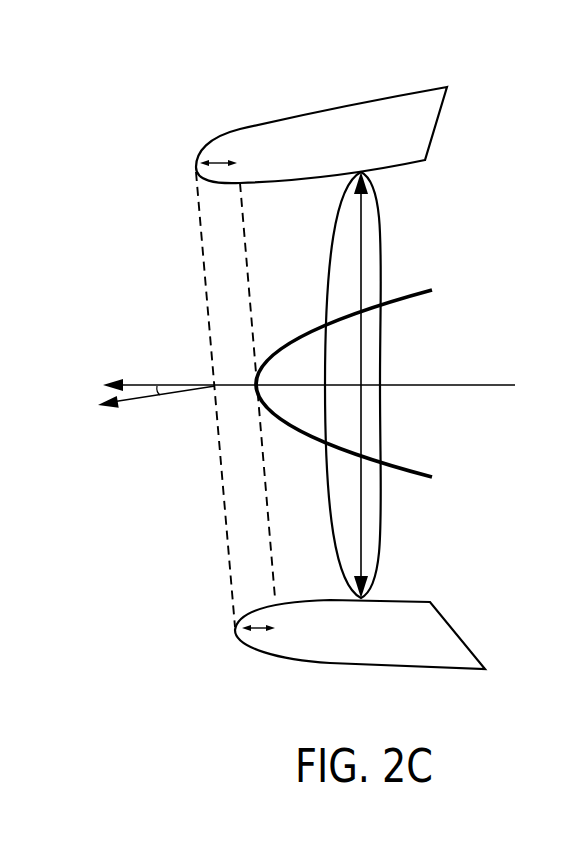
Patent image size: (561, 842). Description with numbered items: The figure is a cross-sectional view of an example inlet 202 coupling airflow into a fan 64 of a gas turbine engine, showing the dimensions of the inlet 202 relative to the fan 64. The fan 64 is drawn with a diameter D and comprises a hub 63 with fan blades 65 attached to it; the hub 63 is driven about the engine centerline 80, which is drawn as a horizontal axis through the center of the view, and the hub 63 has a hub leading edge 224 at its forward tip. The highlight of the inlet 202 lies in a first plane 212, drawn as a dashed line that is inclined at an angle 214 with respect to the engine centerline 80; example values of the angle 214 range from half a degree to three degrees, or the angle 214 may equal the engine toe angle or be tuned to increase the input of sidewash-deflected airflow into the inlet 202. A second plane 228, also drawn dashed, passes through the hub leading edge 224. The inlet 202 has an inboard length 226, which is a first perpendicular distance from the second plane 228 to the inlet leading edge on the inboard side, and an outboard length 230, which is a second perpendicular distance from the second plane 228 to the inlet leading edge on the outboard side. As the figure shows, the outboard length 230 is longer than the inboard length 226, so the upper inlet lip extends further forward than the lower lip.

The inlet 202 is at (392, 112).
The outboard length 230 is at (214, 156).
The first plane 212 is at (190, 190).
The second plane 228 is at (255, 560).
The fan 64 is at (225, 297).
The fan blades 65 is at (380, 255).
The diameter D is at (364, 360).
The hub 63 is at (327, 443).
The hub leading edge 224 is at (240, 402).
The engine centerline 80 is at (497, 384).
The angle 214 is at (130, 400).
The inboard length 226 is at (255, 632).